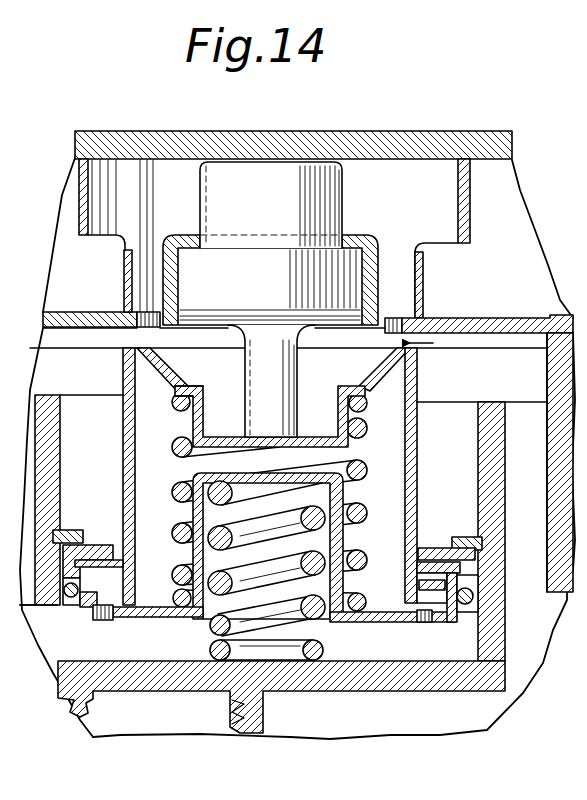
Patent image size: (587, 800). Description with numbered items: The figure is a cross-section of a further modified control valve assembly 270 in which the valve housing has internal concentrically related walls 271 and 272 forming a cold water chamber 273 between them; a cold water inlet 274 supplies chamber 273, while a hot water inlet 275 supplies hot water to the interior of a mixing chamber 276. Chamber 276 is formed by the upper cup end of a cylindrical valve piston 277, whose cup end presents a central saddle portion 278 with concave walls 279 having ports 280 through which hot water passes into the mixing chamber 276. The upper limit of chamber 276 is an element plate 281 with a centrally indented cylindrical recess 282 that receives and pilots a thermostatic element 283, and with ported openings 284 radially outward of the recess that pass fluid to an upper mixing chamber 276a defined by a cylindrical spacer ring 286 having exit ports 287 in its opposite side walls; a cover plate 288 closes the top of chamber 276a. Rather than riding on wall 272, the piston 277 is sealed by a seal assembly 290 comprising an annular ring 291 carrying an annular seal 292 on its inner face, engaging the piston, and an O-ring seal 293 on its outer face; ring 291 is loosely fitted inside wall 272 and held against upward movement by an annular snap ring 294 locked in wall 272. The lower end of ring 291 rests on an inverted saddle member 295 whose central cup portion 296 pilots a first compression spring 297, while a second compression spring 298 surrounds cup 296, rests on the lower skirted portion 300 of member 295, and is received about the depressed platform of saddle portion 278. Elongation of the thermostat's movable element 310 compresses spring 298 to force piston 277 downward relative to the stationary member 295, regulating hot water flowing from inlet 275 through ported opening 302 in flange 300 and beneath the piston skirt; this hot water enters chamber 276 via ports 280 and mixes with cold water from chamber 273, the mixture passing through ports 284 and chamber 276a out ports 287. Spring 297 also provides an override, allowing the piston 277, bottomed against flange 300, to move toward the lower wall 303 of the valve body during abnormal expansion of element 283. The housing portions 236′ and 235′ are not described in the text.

The modified control valve assembly 270 is at (466, 130).
The cover plate 288 is at (178, 131).
The thermostatic element 283 is at (286, 200).
The upper mixing chamber 276a is at (430, 203).
The cylindrical recess 282 is at (378, 252).
The housing wall 236′ is at (20, 265).
The housing wall 235′ is at (0, 316).
The cylindrical spacer ring 286 is at (79, 234).
The exit ports 287 is at (124, 277).
The ported openings 284 is at (138, 312).
The element plate 281 is at (468, 318).
The outer annular wall 272 is at (52, 392).
The ports 280 is at (157, 382).
The concave walls 279 is at (188, 390).
The mixing chamber 276 is at (355, 376).
The movable element 310 is at (258, 428).
The saddle portion 278 is at (300, 444).
The inner wall 271 is at (548, 372).
The cold water chamber 273 is at (500, 380).
The cylindrical valve piston 277 is at (125, 456).
The annular snap ring 294 is at (67, 528).
The central cup portion 296 is at (220, 475).
The second compression spring 298 is at (357, 468).
The annular seal 292 is at (413, 567).
The lower skirted portion 300 is at (370, 610).
The seal assembly 290 is at (439, 546).
The annular ring 291 is at (477, 553).
The O-ring seal 293 is at (472, 590).
The ported opening 302 is at (100, 620).
The first compression spring 297 is at (212, 630).
The inverted saddle member 295 is at (363, 624).
The cold water inlet 274 is at (517, 578).
The lower wall 303 is at (360, 682).
The hot water inlet 275 is at (45, 628).